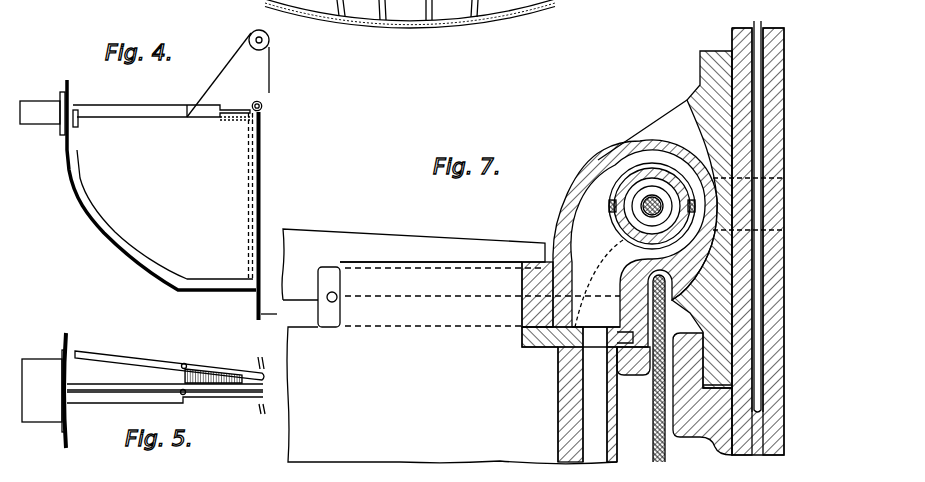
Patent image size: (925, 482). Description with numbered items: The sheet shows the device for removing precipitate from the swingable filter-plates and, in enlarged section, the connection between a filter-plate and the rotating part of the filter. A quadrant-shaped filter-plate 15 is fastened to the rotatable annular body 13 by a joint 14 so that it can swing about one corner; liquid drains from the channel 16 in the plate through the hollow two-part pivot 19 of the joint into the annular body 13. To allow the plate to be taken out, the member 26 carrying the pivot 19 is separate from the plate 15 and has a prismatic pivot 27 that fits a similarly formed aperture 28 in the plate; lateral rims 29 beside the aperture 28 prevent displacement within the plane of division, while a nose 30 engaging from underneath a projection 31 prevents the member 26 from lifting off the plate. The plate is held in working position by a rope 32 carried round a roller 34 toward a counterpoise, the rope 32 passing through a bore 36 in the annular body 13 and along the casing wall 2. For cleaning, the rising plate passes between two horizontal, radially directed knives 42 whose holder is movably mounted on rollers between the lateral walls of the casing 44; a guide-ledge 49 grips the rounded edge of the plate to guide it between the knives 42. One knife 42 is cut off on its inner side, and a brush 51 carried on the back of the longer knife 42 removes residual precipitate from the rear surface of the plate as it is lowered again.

In FIG. 4, the casing wall 2 is at (262, 170).
In FIG. 5, the casing wall 2 is at (262, 365).
In FIG. 7, the casing wall 2 is at (653, 433).
In FIG. 7, the annular body 13 is at (707, 440).
In FIG. 7, the joint 14 is at (668, 112).
In FIG. 4, the filter-plate 15 is at (165, 214).
In FIG. 5, the filter-plate 15 is at (202, 368).
In FIG. 7, the filter-plate 15 is at (288, 437).
In FIG. 4, the channel 16 is at (252, 196).
In FIG. 7, the channel 16 is at (617, 410).
In FIG. 7, the hollow two-part pivot 19 is at (636, 194).
In FIG. 4, the member carrying the pivot 26 is at (256, 101).
In FIG. 7, the member carrying the pivot 26 is at (590, 178).
In FIG. 7, the prismatic pivot 27 is at (318, 315).
In FIG. 7, the aperture 28 is at (371, 280).
In FIG. 7, the lateral rims 29 is at (571, 362).
In FIG. 7, the nose 30 is at (633, 371).
In FIG. 7, the projection 31 is at (625, 345).
In FIG. 4, the rope 32 is at (232, 60).
In FIG. 7, the rope 32 is at (757, 21).
In FIG. 4, the roller 34 is at (267, 35).
In FIG. 7, the bore 36 is at (740, 28).
In FIG. 4, the knife 42 is at (133, 105).
In FIG. 5, the knife 42 is at (110, 402).
In FIG. 7, the knife 42 is at (340, 233).
In FIG. 4, the casing 44 is at (40, 100).
In FIG. 5, the casing 44 is at (36, 423).
In FIG. 4, the guide-ledge 49 is at (78, 109).
In FIG. 5, the brush 51 is at (182, 376).